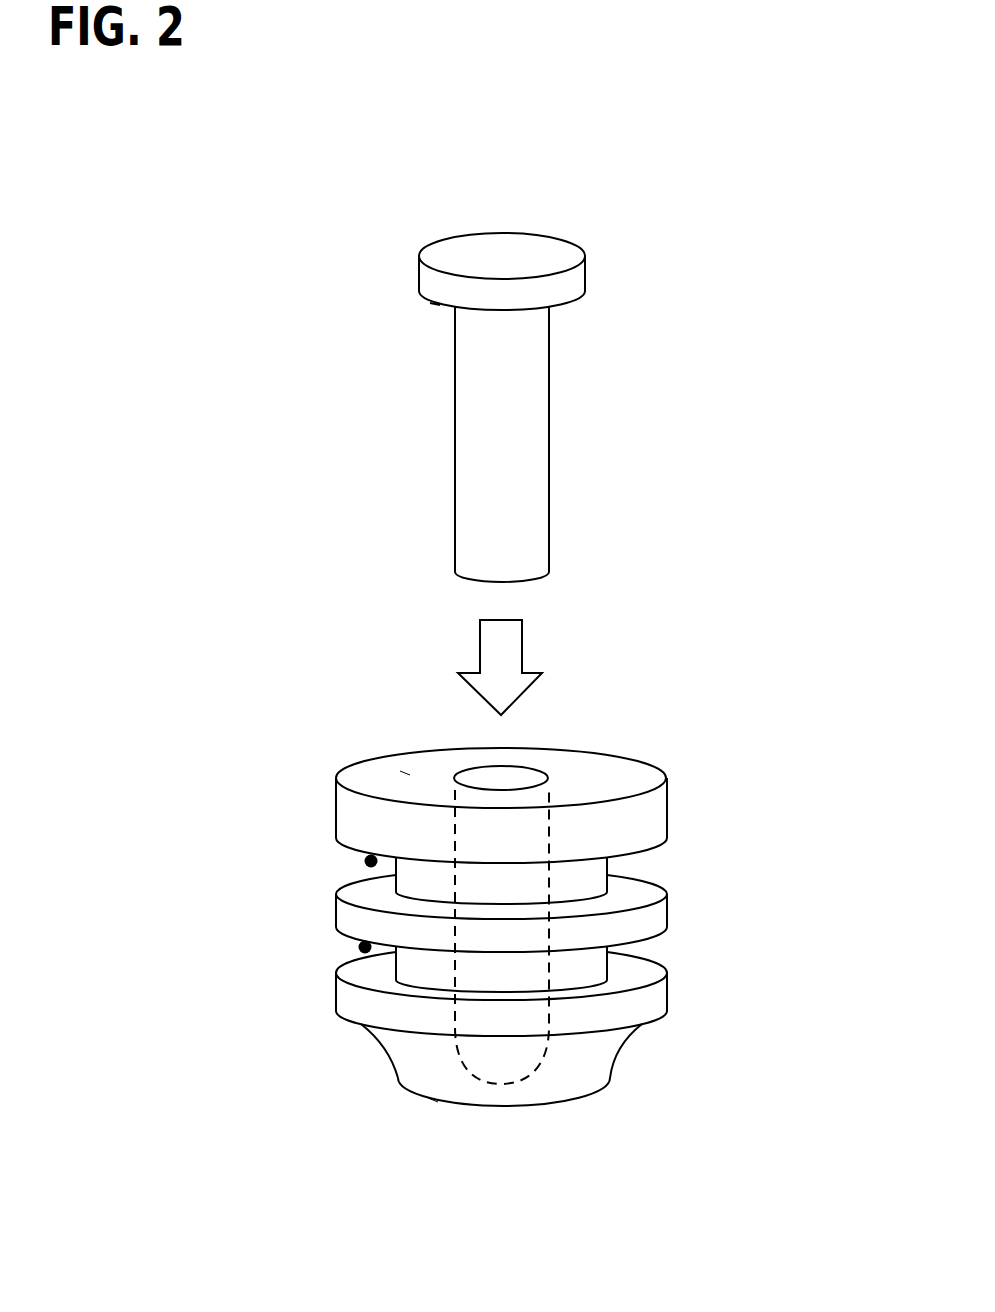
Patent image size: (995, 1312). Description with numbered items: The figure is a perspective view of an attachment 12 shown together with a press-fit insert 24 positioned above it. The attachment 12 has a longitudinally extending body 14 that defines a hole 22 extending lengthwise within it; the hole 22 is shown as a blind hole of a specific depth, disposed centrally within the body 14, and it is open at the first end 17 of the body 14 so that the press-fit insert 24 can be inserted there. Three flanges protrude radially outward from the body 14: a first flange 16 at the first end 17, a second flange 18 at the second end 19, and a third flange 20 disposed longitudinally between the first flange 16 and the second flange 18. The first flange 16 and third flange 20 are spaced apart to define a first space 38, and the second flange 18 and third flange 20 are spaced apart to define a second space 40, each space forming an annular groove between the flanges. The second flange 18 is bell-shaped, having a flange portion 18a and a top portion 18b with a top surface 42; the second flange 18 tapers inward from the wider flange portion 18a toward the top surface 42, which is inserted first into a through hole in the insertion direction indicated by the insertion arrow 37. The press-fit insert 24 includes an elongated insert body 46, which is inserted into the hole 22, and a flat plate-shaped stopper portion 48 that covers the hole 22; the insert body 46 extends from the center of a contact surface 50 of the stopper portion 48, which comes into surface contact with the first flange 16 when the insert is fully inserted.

The attachment 12 is at (257, 723).
The body 14 is at (413, 965).
The first flange 16 is at (668, 808).
The first end 17 is at (407, 773).
The second flange 18 is at (796, 1005).
The flange portion 18a is at (653, 1001).
The top portion 18b is at (575, 1060).
The second end 19 is at (505, 1108).
The third flange 20 is at (668, 907).
The hole 22 is at (550, 831).
The press-fit insert 24 is at (357, 327).
The insertion arrow 37 is at (514, 693).
The first space 38 is at (371, 861).
The second space 40 is at (365, 947).
The top surface 42 is at (433, 1100).
The insert body 46 is at (538, 380).
The stopper portion 48 is at (573, 282).
The contact surface 50 is at (436, 304).